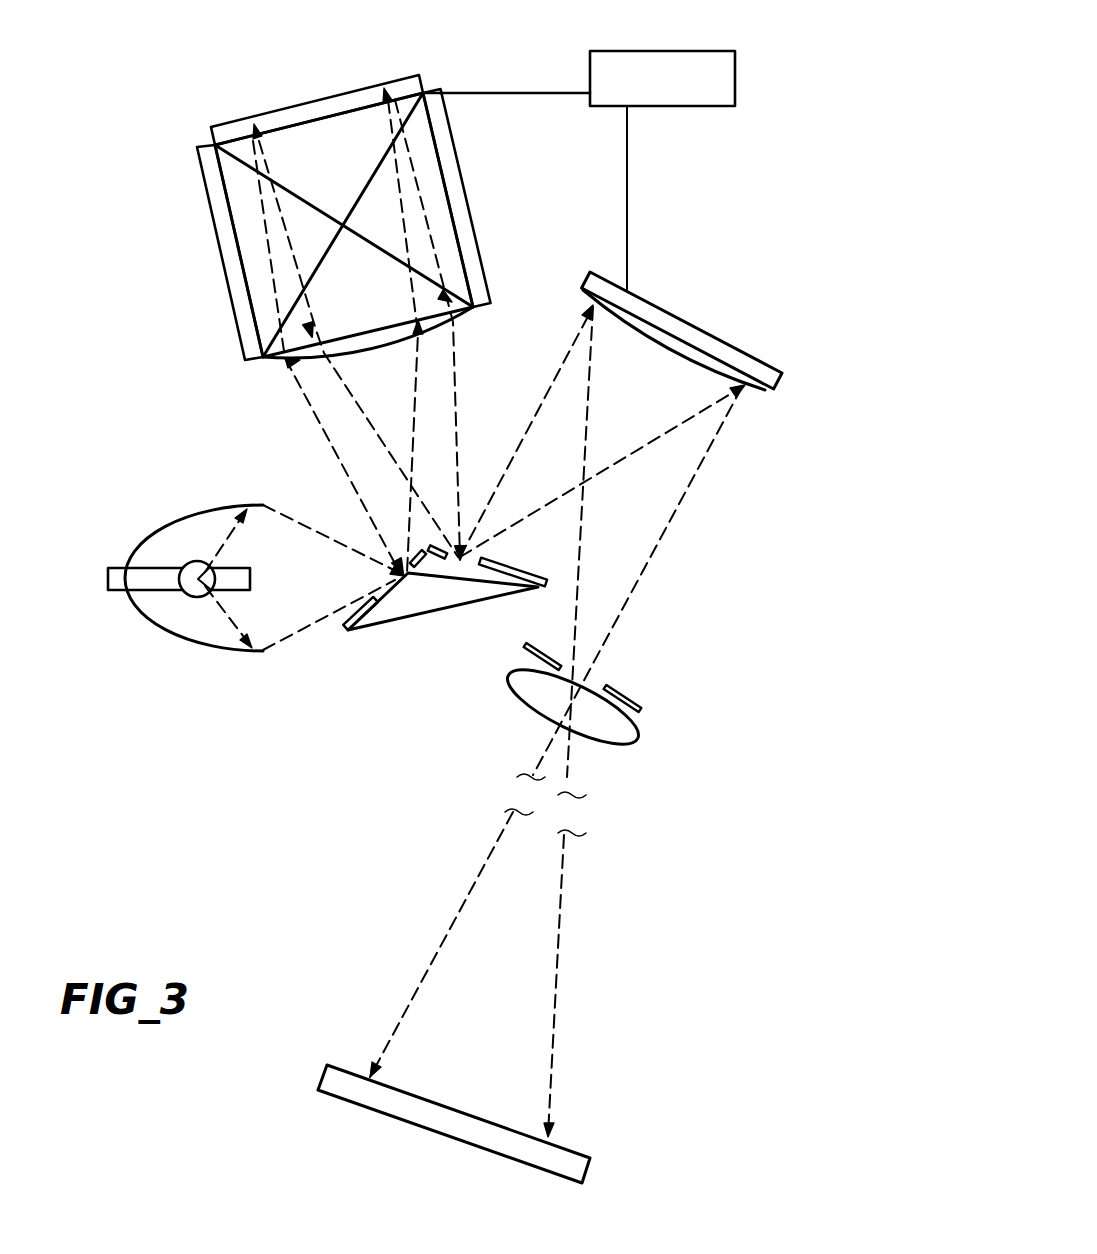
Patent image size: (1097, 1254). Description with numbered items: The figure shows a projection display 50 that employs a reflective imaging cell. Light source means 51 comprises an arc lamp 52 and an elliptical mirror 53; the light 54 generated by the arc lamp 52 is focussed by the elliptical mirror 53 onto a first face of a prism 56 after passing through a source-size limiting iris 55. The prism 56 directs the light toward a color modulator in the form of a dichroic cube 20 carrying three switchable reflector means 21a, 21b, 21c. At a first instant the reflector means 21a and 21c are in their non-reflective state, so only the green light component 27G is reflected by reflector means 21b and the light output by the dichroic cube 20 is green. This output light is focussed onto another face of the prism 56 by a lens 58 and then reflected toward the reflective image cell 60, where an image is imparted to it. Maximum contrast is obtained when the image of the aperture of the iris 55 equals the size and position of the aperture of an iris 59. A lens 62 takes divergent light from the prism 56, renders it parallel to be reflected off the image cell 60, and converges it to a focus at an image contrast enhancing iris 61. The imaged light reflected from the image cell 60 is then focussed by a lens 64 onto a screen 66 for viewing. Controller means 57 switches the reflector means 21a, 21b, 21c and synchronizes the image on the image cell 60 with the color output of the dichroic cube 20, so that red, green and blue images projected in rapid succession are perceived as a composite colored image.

The projection display 50 is at (130, 148).
The dichroic cube 20 is at (340, 130).
The reflector means 21a is at (453, 173).
The reflector means 21b is at (273, 120).
The reflector means 21c is at (227, 257).
The green light component 27G is at (382, 125).
The controller means 57 is at (735, 97).
The lens 58 is at (263, 358).
The reflective image cell 60 is at (777, 383).
The lens 62 is at (757, 393).
The elliptical mirror 53 is at (176, 510).
The light 54 is at (310, 530).
The light source means 51 is at (118, 606).
The arc lamp 52 is at (197, 600).
The source-size limiting iris 55 is at (355, 628).
The prism 56 is at (398, 620).
The iris 59 is at (520, 573).
The image contrast enhancing iris 61 is at (625, 693).
The lens 64 is at (642, 747).
The screen 66 is at (597, 1177).